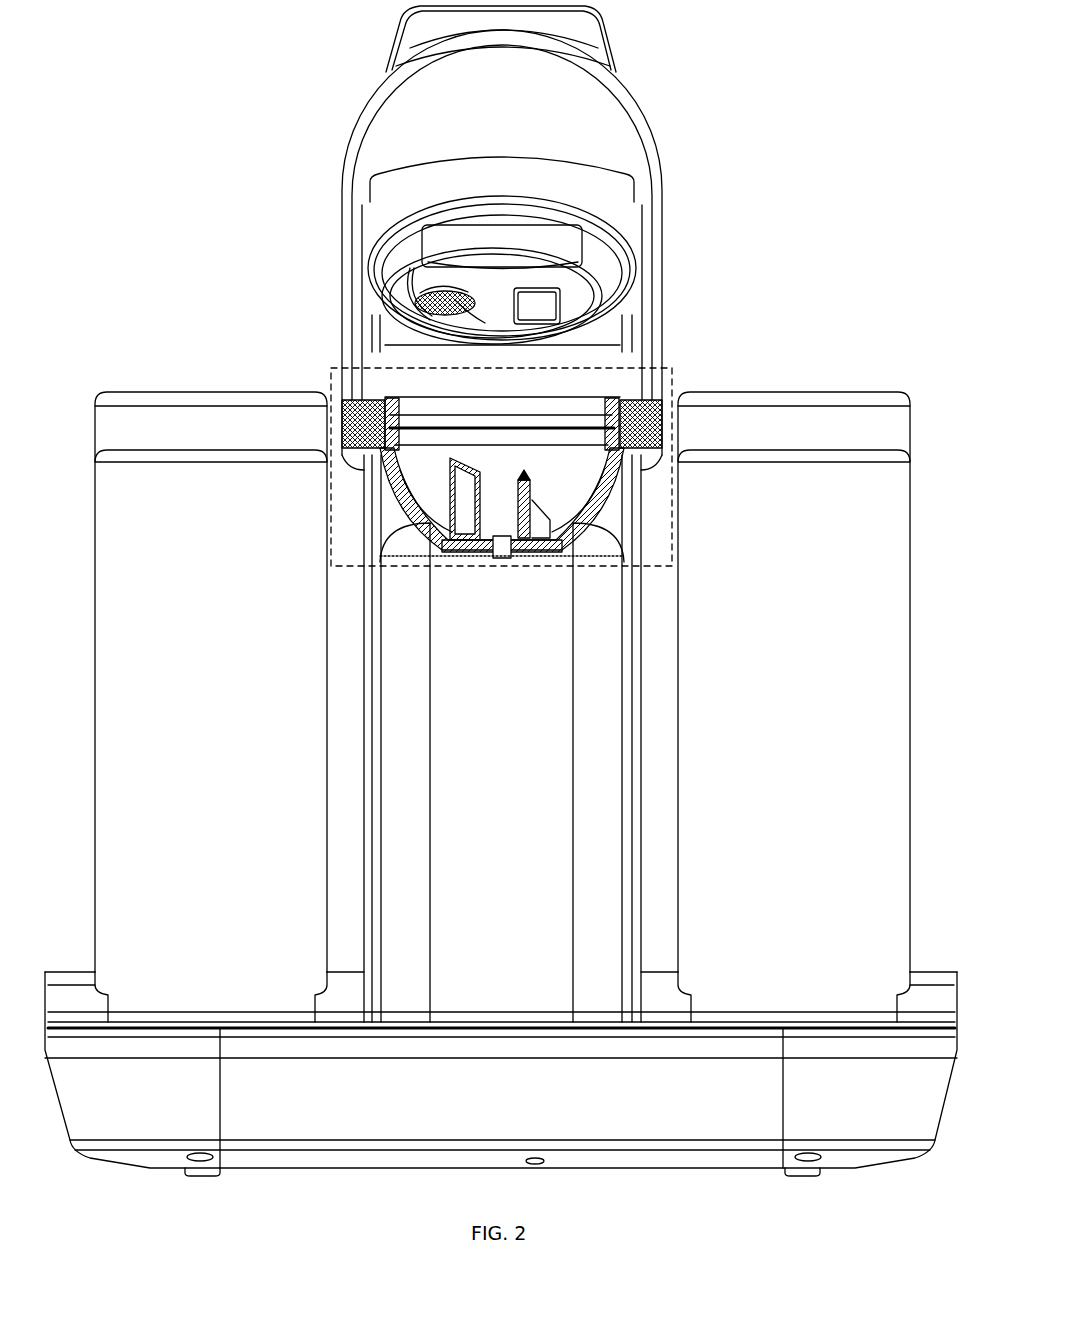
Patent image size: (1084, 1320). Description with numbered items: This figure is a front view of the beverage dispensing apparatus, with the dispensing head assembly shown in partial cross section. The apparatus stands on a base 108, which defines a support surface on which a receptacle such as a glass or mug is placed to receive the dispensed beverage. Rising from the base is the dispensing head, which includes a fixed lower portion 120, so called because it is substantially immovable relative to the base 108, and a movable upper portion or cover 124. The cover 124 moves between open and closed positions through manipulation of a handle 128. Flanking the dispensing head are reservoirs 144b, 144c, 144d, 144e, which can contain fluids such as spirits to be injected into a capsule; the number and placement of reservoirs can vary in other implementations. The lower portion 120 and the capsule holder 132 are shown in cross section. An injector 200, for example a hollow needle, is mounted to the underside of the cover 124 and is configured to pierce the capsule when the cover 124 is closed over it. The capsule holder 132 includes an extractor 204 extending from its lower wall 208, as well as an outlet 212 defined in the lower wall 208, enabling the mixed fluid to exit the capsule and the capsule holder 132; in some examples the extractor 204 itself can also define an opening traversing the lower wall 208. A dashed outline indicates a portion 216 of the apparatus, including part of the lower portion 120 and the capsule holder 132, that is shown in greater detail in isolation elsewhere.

The base 108 is at (501, 1074).
The fixed lower portion 120 is at (378, 470).
The cover 124 is at (382, 230).
The handle 128 is at (646, 98).
The capsule holder 132 is at (488, 552).
The reservoir 144b is at (211, 645).
The reservoir 144c is at (794, 657).
The reservoir 144d is at (211, 707).
The reservoir 144e is at (794, 707).
The injector 200 is at (437, 320).
The extractor 204 is at (524, 484).
The lower wall 208 is at (400, 508).
The outlet 212 is at (504, 556).
The portion 216 is at (672, 376).